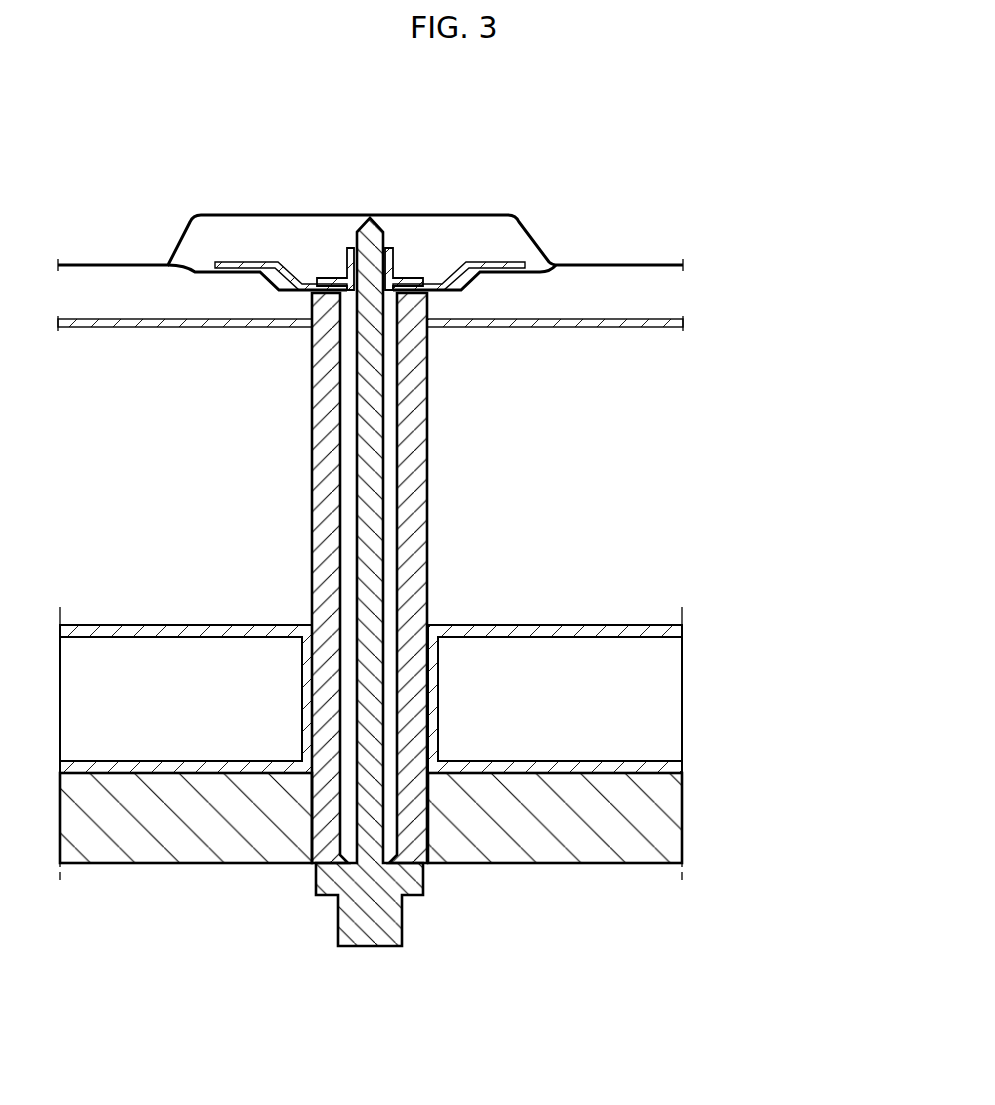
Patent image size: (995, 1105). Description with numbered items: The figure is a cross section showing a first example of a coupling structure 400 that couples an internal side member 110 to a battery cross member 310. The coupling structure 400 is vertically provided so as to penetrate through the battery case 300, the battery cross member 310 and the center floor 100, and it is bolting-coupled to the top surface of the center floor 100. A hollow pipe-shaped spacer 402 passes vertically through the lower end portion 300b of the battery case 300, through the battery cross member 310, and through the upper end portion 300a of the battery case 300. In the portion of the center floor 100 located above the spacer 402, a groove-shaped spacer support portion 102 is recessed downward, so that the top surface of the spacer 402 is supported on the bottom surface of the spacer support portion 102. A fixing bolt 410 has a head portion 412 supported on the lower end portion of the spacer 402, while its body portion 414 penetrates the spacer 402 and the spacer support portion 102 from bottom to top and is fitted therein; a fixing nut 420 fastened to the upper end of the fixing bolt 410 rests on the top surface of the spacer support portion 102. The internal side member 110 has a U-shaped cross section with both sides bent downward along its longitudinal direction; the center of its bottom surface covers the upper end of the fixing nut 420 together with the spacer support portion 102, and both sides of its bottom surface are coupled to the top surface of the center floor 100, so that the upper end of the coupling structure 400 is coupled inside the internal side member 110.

The center floor 100 is at (493, 265).
The spacer support portion 102 is at (433, 282).
The internal side member 110 is at (366, 570).
The battery case 300 is at (450, 789).
The upper end portion of the battery case 300a is at (643, 320).
The lower end portion of the battery case 300b is at (156, 850).
The battery cross member 310 is at (632, 632).
The coupling structure 400 is at (385, 570).
The spacer 402 is at (322, 417).
The fixing bolt 410 is at (440, 638).
The head portion 412 is at (362, 948).
The body portion 414 is at (366, 638).
The fixing nut 420 is at (348, 270).